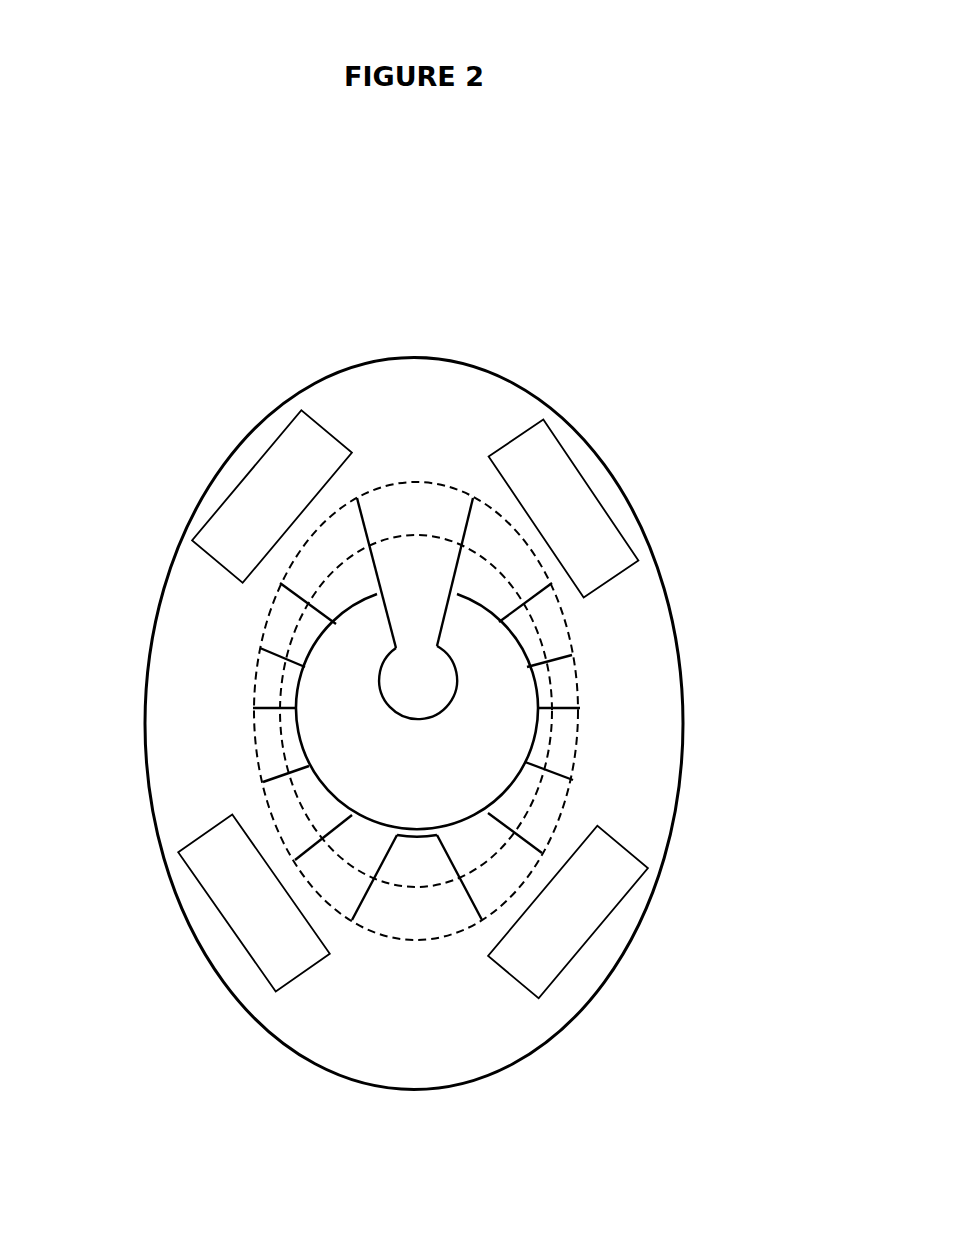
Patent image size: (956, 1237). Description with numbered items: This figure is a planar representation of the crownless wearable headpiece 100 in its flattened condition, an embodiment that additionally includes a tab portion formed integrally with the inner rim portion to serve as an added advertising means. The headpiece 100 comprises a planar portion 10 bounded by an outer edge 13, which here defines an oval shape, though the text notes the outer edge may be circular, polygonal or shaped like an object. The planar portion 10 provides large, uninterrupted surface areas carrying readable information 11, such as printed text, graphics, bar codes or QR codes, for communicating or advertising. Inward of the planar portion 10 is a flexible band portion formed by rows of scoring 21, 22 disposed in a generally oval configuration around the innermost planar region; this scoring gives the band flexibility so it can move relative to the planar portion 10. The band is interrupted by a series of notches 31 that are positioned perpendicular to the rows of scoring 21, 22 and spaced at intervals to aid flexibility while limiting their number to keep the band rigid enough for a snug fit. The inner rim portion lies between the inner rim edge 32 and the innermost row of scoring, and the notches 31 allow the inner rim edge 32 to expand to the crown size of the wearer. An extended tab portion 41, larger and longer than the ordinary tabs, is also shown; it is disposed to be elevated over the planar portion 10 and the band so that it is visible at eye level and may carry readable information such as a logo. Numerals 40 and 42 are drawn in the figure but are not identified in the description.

The crownless wearable headpiece 100 is at (245, 356).
The planar portion 10 is at (203, 645).
The outer edge of the planar portion 13 is at (433, 358).
The readable information 11 is at (645, 863).
The row of scoring 21 is at (547, 763).
The row of scoring 22 is at (578, 703).
The notch 31 is at (452, 860).
The inner rim edge 32 is at (300, 745).
The central area 40 is at (458, 690).
The extended tab portion 41 is at (407, 618).
The logo 42 is at (412, 693).